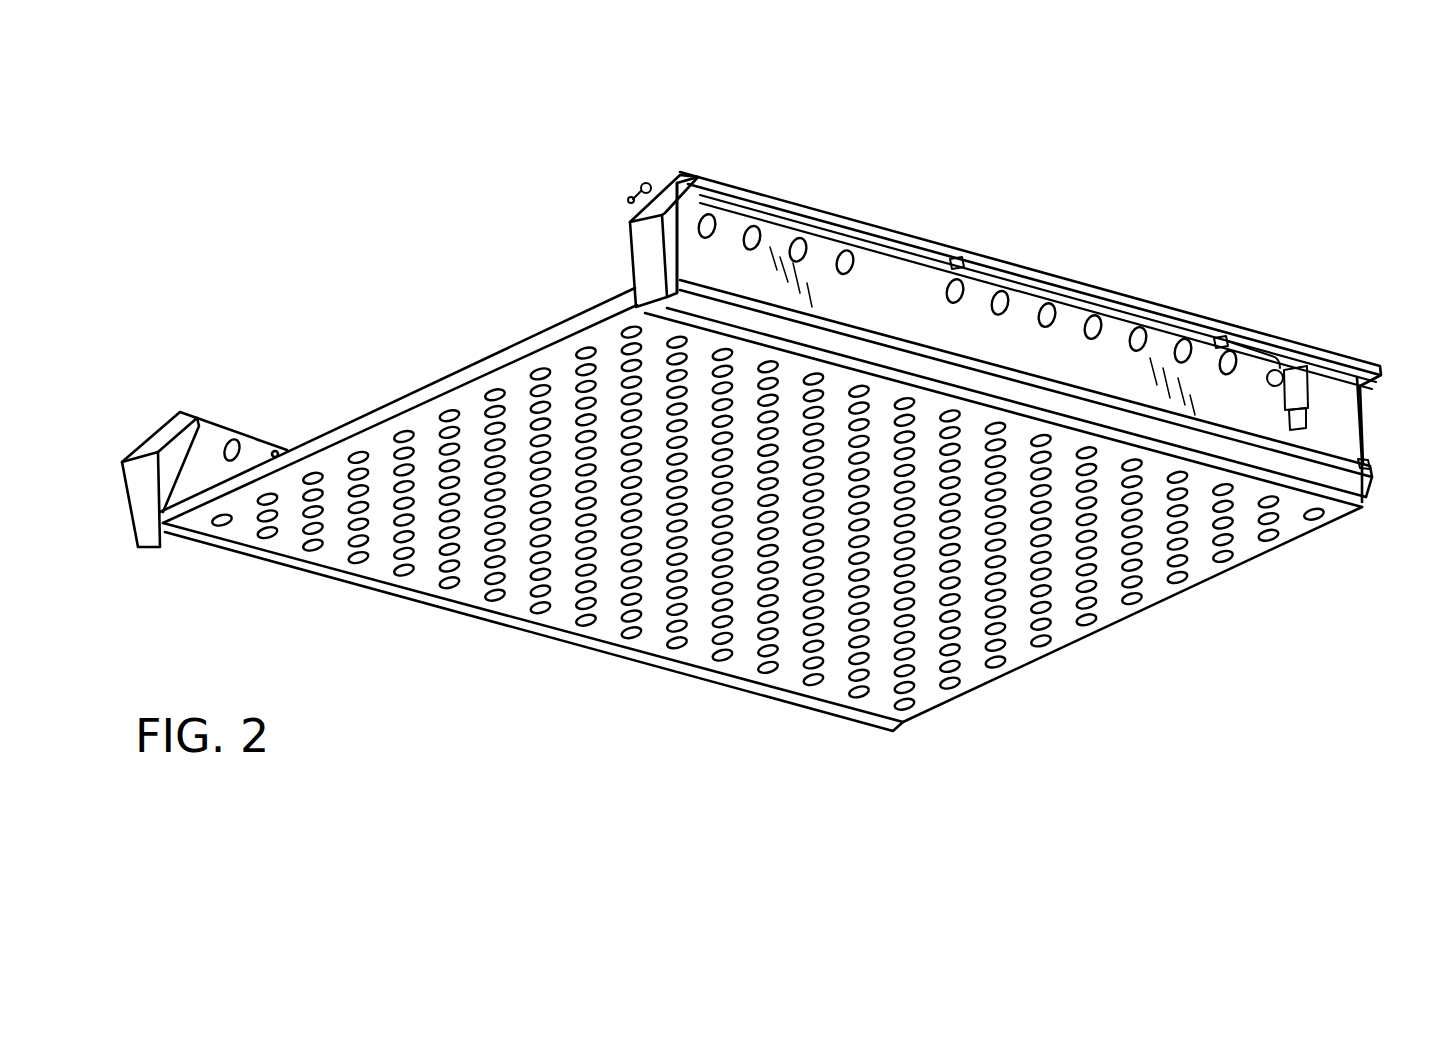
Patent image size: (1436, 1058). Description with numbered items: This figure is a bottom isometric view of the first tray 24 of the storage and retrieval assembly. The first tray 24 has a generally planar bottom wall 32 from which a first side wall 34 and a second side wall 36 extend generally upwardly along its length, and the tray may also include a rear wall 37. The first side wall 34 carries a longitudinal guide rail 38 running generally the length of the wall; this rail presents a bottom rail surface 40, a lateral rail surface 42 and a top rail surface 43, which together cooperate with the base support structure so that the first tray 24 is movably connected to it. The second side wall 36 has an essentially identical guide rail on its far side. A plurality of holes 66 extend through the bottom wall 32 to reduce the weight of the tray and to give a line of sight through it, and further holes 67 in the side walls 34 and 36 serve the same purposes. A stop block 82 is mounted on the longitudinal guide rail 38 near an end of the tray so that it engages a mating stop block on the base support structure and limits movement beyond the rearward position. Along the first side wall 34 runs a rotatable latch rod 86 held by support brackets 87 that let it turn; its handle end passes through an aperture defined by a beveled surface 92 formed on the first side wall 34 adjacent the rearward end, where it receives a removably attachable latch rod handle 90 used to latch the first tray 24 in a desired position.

The first tray 24 is at (432, 353).
The bottom wall 32 is at (384, 562).
The first side wall 34 is at (872, 212).
The second side wall 36 is at (207, 422).
The rear wall 37 is at (573, 320).
The longitudinal guide rail 38 is at (1051, 382).
The bottom rail surface 40 is at (1362, 470).
The lateral rail surface 42 is at (1279, 452).
The top rail surface 43 is at (1128, 410).
The holes 66 is at (533, 592).
The holes 67 is at (714, 222).
The stop block 82 is at (1370, 464).
The latch rod 86 is at (888, 265).
The support brackets 87 is at (958, 262).
The latch rod handle 90 is at (646, 182).
The beveled surface 92 is at (675, 176).